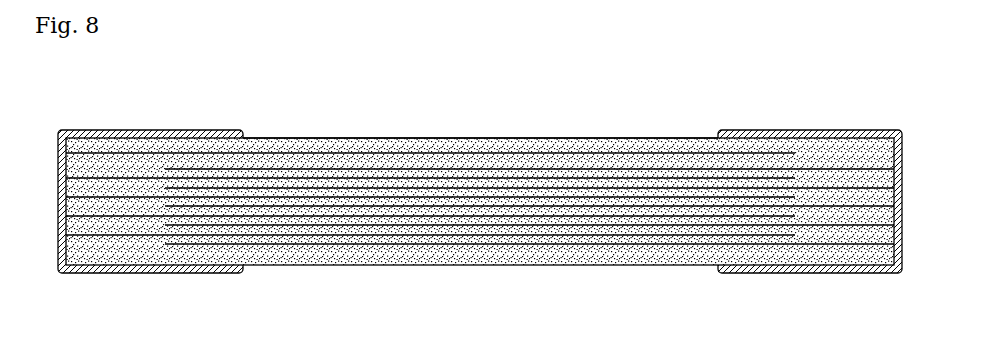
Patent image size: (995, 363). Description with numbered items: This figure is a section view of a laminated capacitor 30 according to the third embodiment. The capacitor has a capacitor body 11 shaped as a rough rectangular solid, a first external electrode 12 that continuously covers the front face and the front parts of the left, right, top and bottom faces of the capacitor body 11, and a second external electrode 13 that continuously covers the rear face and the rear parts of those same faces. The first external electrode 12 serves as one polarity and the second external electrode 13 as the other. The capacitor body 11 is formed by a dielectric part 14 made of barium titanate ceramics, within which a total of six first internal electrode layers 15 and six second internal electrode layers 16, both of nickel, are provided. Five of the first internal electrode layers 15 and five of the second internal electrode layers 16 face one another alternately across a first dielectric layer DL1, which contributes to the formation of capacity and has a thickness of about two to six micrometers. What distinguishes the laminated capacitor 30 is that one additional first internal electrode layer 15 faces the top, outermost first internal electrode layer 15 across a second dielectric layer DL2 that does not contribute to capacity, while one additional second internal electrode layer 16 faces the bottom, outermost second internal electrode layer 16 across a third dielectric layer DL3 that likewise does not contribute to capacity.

The capacitor body 11 is at (448, 138).
The first external electrode 12 is at (116, 130).
The second external electrode 13 is at (843, 130).
The dielectric part 14 is at (523, 138).
The first internal electrode layers 15 is at (87, 153).
The second internal electrode layers 16 is at (865, 172).
The laminated capacitor 30 is at (323, 138).
The first dielectric layer DL1 is at (320, 160).
The second dielectric layer DL2 is at (578, 157).
The third dielectric layer DL3 is at (622, 250).